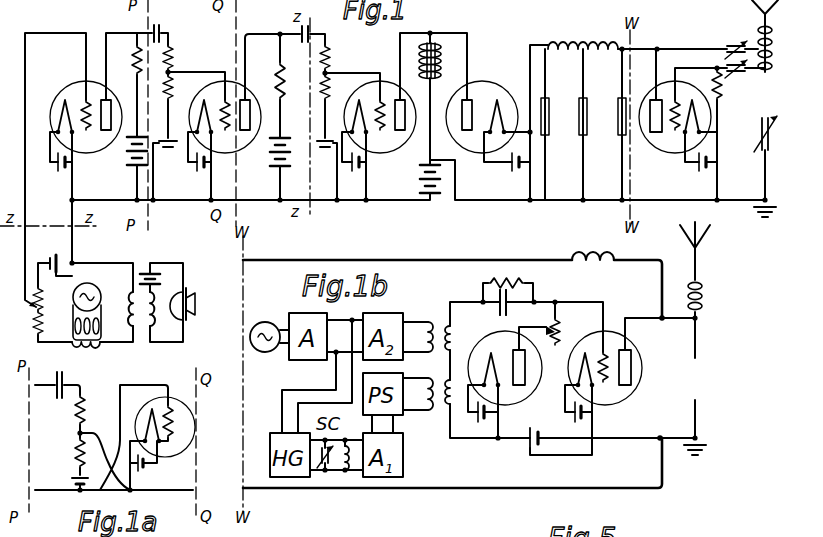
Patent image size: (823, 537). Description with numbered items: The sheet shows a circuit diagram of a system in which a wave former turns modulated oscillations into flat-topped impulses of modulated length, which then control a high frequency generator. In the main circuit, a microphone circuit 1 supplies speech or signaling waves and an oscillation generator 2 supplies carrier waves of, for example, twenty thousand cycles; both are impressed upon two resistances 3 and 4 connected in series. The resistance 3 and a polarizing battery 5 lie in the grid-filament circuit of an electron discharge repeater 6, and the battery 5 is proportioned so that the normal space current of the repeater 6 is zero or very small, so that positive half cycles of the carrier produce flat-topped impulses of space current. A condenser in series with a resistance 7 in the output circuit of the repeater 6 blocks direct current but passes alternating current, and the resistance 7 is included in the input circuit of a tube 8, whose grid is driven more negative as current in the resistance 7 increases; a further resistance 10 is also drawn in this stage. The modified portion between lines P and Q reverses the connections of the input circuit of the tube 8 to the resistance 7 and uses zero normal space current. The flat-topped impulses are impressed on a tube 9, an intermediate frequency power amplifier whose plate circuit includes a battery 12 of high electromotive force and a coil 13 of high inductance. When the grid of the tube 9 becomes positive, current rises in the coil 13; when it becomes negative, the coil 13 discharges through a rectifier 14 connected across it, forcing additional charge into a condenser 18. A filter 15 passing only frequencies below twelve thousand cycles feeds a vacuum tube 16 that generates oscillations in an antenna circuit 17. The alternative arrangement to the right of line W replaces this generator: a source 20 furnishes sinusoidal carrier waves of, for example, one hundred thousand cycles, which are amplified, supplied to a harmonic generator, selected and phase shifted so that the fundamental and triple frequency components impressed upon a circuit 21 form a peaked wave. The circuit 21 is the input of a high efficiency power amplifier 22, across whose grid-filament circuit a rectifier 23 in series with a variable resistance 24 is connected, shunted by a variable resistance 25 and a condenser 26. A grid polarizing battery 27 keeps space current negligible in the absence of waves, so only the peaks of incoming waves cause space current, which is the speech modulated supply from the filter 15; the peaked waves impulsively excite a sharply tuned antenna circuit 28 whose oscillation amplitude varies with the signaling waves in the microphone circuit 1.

In FIG. 1, the microphone circuit 1 is at (150, 271).
In FIG. 1, the oscillation generator 2 is at (98, 298).
In FIG. 1, the resistance 3 is at (48, 298).
In FIG. 1, the resistance 4 is at (47, 323).
In FIG. 1, the polarizing battery 5 is at (62, 255).
In FIG. 1, the electron discharge repeater 6 is at (74, 90).
In FIG. 1, the resistance 7 is at (172, 90).
In FIG. 1A, the resistance 7 is at (78, 462).
In FIG. 1, the tube 8 is at (240, 147).
In FIG. 1A, the tube 8 is at (191, 453).
In FIG. 1, the tube 9 is at (391, 90).
In FIG. 1, the resistance 10 is at (270, 81).
In FIG. 1, the battery 12 is at (425, 180).
In FIG. 1, the coil 13 is at (441, 62).
In FIG. 1, the rectifier 14 is at (490, 96).
In FIG. 1, the filter 15 is at (566, 41).
In FIG. 1, the vacuum tube 16 is at (672, 148).
In FIG. 1, the antenna circuit 17 is at (763, 96).
In FIG. 1, the condenser 18 is at (553, 112).
In FIG. 1B, the source 20 is at (274, 325).
In FIG. 1B, the circuit 21 is at (450, 308).
In FIG. 1B, the high efficiency power amplifier 22 is at (640, 367).
In FIG. 1B, the rectifier 23 is at (523, 392).
In FIG. 1B, the variable resistance 24 is at (578, 334).
In FIG. 1B, the variable resistance 25 is at (487, 280).
In FIG. 1B, the condenser 26 is at (500, 316).
In FIG. 1B, the grid polarizing battery 27 is at (545, 437).
In FIG. 1B, the antenna circuit 28 is at (698, 271).